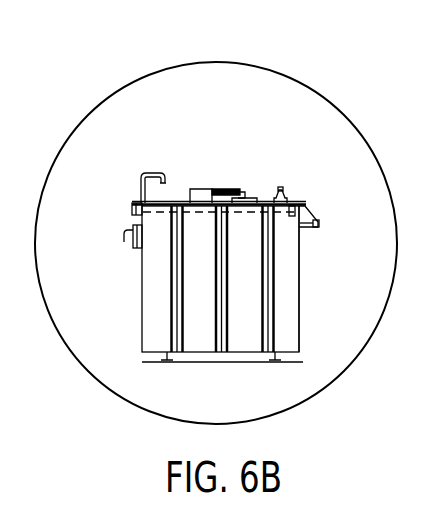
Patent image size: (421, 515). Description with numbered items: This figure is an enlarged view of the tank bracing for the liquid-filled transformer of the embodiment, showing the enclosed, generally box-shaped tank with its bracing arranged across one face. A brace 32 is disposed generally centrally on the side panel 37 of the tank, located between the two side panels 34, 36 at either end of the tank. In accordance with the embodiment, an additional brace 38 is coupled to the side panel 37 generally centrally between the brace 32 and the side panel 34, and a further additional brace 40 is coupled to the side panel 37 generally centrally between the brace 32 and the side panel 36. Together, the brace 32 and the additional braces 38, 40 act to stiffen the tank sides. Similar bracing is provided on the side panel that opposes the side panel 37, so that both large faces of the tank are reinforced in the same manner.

The brace 32 is at (228, 345).
The side panel 34 is at (300, 298).
The side panel 36 is at (142, 267).
The side panel 37 is at (252, 283).
The additional brace 38 is at (270, 252).
The additional brace 40 is at (172, 328).